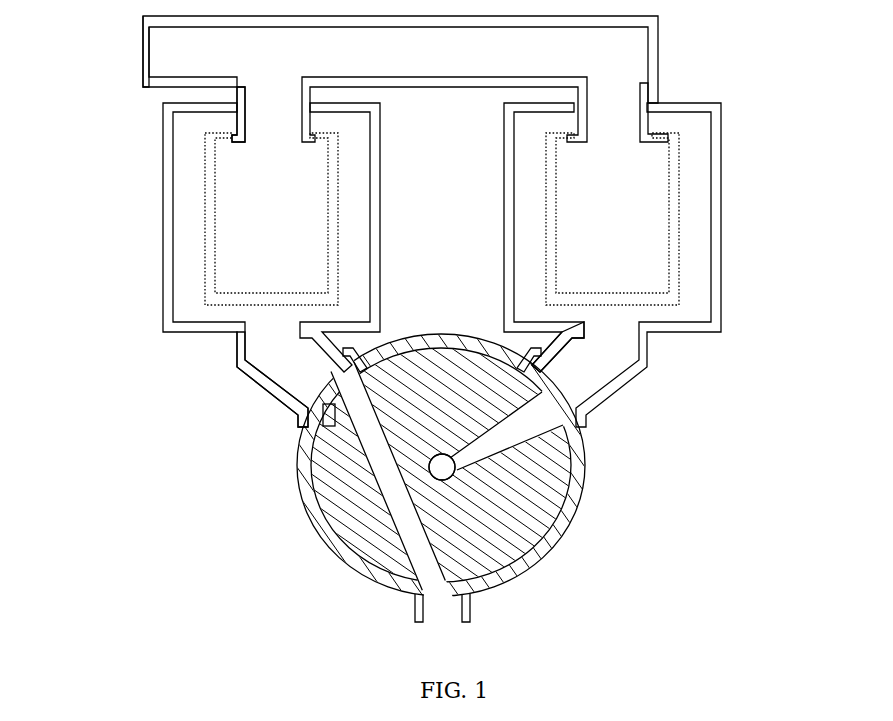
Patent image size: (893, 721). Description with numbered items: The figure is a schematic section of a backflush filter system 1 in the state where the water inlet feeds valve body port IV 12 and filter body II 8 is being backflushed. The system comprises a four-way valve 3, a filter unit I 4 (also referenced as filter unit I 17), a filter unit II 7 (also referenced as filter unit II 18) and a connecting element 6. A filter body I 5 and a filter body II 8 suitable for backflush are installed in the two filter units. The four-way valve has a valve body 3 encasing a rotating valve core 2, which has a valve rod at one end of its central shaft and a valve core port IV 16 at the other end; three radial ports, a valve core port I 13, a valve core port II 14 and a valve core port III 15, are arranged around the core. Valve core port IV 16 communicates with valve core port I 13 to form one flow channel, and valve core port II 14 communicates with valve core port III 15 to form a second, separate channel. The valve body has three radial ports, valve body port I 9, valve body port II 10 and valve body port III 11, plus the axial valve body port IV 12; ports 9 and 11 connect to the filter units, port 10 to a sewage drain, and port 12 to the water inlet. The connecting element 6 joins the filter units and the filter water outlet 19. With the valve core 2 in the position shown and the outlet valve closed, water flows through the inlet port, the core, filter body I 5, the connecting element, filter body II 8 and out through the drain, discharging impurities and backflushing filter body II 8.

The backflush filter system 1 is at (740, 80).
The rotating valve core 2 is at (350, 487).
The four-way valve 3 is at (558, 532).
The filter unit I 4 is at (715, 155).
The filter body I 5 is at (680, 200).
The connecting element 6 is at (663, 35).
The filter unit II 7 is at (160, 172).
The filter body II 8 is at (212, 230).
The valve body port I 9 is at (577, 363).
The valve body port II 10 is at (437, 607).
The valve body port III 11 is at (317, 380).
The valve body port IV 12 is at (457, 467).
The valve core port I 13 is at (560, 410).
The valve core port II 14 is at (437, 576).
The valve core port III 15 is at (335, 426).
The valve core port IV 16 is at (644, 466).
The filter unit I 17 is at (628, 125).
The filter unit II 18 is at (265, 123).
The filter water outlet 19 is at (160, 50).